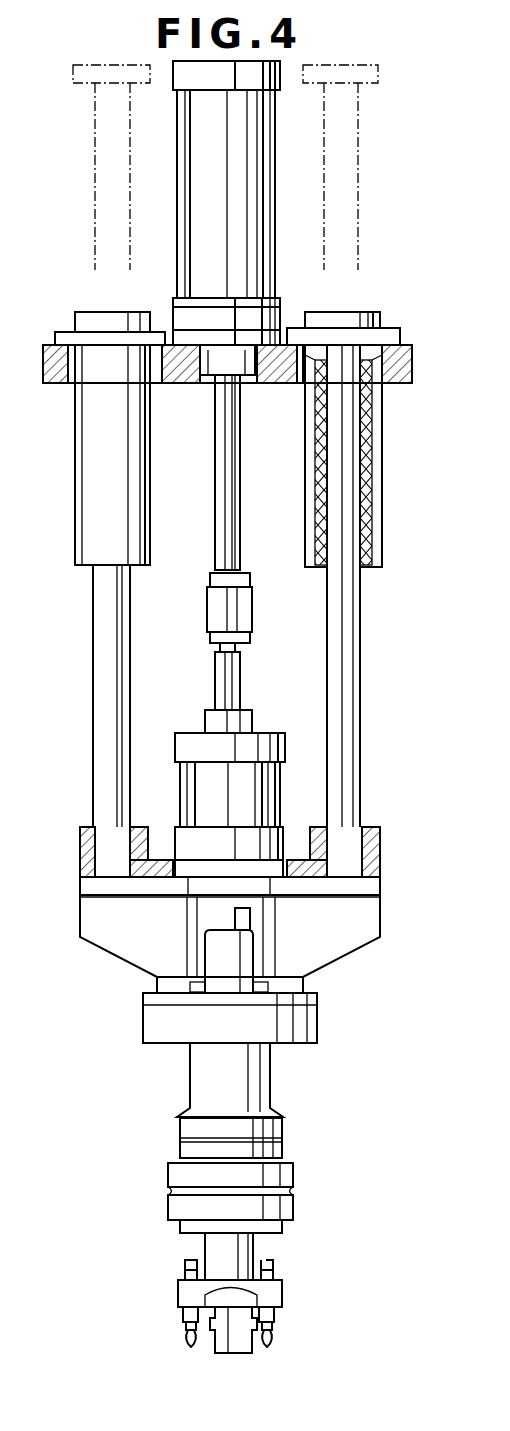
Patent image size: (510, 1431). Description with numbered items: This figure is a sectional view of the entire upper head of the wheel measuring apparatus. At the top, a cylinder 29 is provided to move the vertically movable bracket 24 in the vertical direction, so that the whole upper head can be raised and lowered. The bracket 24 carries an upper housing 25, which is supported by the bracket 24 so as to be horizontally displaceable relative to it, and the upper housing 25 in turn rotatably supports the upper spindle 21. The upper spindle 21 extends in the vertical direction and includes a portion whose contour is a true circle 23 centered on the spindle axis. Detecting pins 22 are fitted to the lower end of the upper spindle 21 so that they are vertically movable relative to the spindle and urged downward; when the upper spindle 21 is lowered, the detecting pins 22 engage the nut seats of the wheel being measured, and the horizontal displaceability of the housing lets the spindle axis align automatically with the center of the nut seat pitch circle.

The cylinder 29 is at (237, 182).
The bracket 24 is at (352, 917).
The upper housing 25 is at (238, 1090).
The true circle 23 is at (280, 1207).
The upper spindle 21 is at (230, 1250).
The detecting pins 22 is at (273, 1342).